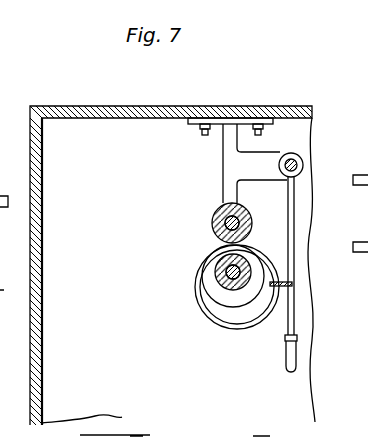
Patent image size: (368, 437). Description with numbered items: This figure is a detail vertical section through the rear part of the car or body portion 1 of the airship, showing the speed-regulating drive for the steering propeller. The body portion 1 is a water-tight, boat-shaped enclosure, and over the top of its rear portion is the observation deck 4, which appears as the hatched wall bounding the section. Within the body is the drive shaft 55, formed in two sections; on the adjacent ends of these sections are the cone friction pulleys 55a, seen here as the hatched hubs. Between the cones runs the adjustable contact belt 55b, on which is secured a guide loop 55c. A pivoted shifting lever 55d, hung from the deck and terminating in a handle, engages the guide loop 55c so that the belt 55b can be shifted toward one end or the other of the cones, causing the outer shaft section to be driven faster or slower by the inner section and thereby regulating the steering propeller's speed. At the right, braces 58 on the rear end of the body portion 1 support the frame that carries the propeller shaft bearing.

The observation deck 4 is at (163, 107).
The car or body portion 1 is at (43, 265).
The drive shaft 55 is at (214, 227).
The cone friction pulleys 55a is at (214, 217).
The adjustable contact belt 55b is at (235, 323).
The guide loop 55c is at (295, 285).
The pivoted shifting lever 55d is at (292, 203).
The braces 58 is at (366, 205).